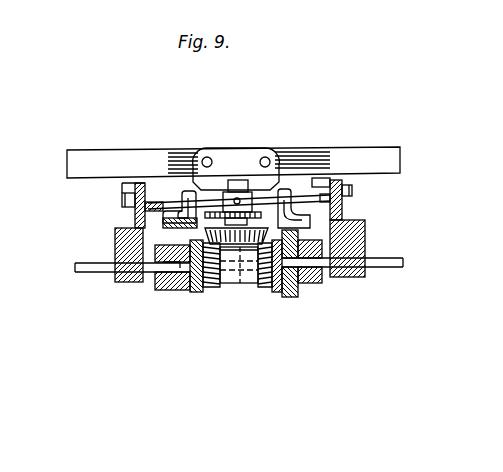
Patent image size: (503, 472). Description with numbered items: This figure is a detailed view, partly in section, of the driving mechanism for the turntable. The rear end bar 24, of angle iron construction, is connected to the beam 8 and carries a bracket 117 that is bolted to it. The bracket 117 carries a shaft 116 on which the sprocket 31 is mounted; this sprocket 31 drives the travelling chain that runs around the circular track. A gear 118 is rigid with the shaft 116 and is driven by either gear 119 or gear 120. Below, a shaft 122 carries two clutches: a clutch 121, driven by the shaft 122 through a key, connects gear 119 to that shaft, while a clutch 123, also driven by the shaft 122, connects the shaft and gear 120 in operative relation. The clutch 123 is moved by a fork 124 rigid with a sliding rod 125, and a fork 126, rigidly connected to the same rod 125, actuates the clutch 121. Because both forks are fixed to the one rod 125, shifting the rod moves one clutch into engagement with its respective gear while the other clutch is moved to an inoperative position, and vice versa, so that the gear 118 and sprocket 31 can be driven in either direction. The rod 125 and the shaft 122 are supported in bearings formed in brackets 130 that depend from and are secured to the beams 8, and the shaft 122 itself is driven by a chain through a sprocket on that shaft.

The rear end bar 24 is at (103, 160).
The beam 8 is at (122, 191).
The sprocket 31 is at (262, 207).
The shaft 116 is at (135, 222).
The bracket 117 is at (230, 155).
The gear 118 is at (252, 250).
The gear 119 is at (186, 301).
The gear 120 is at (268, 294).
The clutch 121 is at (162, 273).
The shaft 122 is at (77, 273).
The clutch 123 is at (290, 298).
The fork 124 is at (285, 197).
The sliding rod 125 is at (163, 207).
The fork 126 is at (188, 194).
The bracket 130 is at (115, 250).